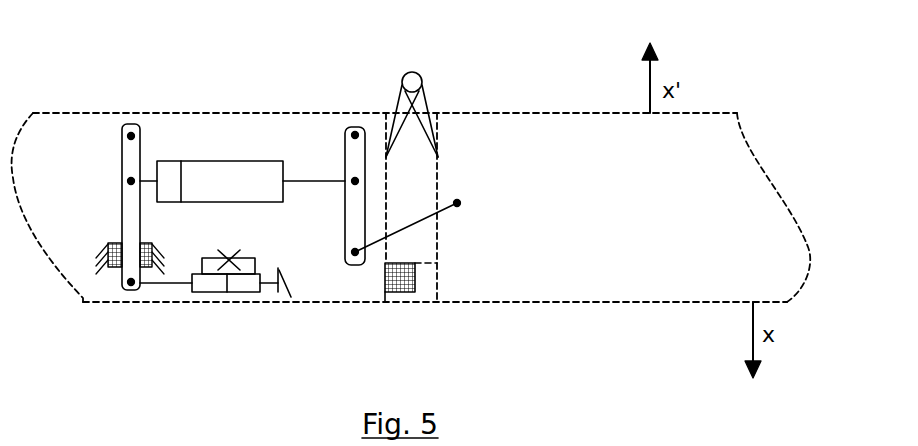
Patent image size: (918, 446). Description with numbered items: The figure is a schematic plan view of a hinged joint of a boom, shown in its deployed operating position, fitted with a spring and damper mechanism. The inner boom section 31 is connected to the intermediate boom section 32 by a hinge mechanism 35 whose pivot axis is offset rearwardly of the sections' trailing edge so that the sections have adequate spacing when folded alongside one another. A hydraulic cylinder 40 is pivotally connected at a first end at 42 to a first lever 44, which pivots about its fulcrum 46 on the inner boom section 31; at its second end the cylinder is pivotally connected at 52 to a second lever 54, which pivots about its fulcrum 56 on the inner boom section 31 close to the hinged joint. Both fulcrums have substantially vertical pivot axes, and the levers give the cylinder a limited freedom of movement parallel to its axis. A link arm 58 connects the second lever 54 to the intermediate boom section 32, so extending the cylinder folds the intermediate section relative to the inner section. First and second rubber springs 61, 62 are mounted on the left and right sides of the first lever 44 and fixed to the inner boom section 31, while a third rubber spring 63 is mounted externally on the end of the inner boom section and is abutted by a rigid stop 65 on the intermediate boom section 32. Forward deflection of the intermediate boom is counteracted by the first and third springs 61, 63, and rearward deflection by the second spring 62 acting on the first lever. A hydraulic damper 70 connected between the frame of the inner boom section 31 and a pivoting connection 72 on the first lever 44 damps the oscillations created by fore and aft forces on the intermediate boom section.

The inner boom section 31 is at (80, 113).
The intermediate boom section 32 is at (710, 113).
The hinge mechanism 35 is at (421, 75).
The hydraulic cylinder 40 is at (250, 155).
The first end pivotal connection 42 is at (122, 181).
The first lever 44 is at (126, 156).
The fulcrum of first lever 46 is at (132, 134).
The second end pivotal connection 52 is at (352, 178).
The second lever 54 is at (345, 230).
The fulcrum of second lever 56 is at (353, 131).
The link arm 58 is at (413, 216).
The first rubber spring 61 is at (110, 265).
The second rubber spring 62 is at (153, 248).
The third rubber spring 63 is at (400, 292).
The rigid stop 65 is at (425, 280).
The hydraulic damper 70 is at (230, 292).
The pivoting connection 72 is at (135, 291).